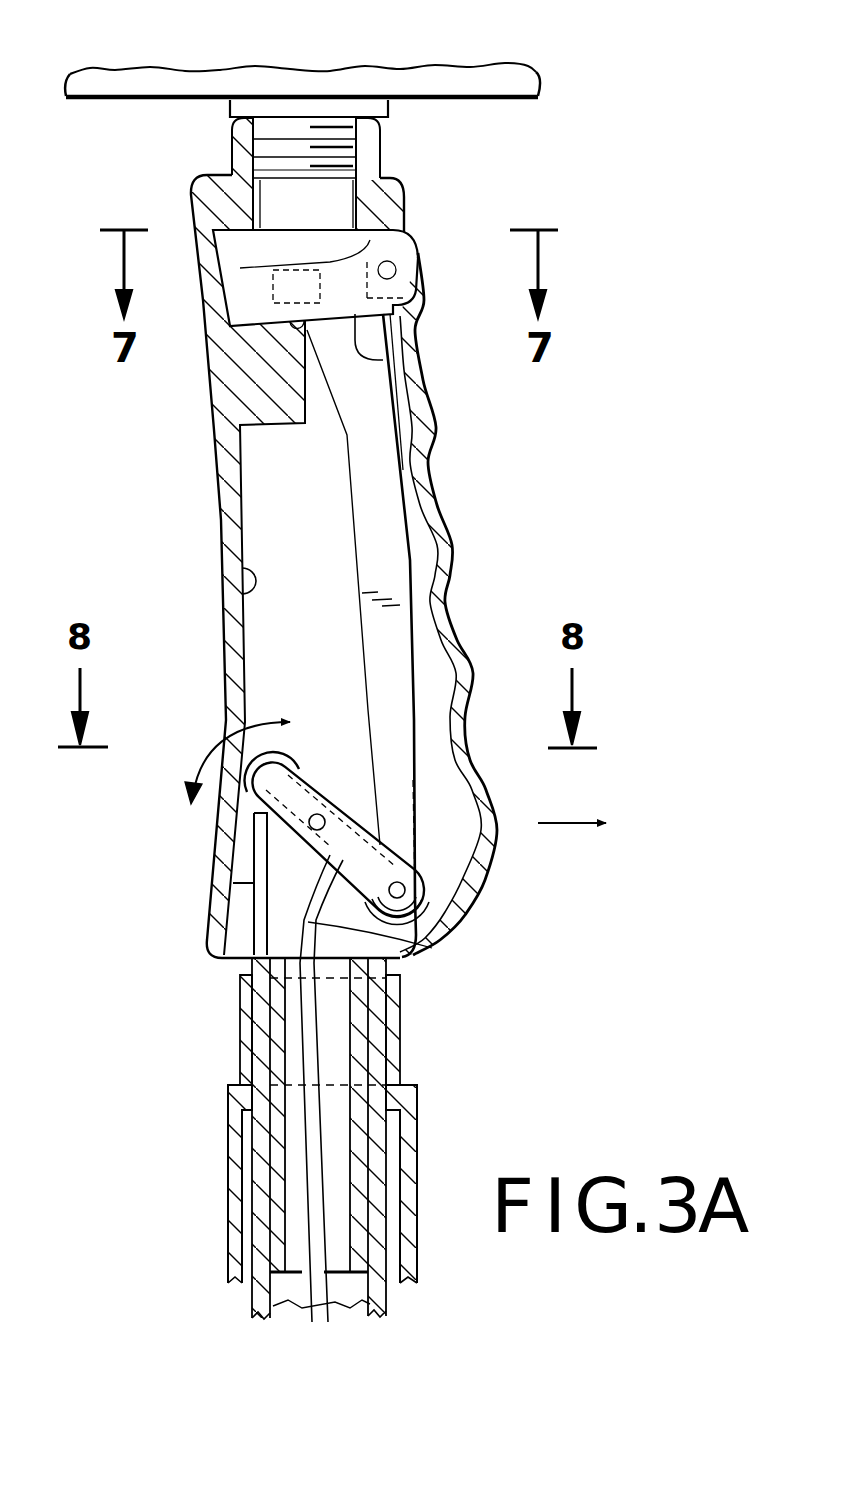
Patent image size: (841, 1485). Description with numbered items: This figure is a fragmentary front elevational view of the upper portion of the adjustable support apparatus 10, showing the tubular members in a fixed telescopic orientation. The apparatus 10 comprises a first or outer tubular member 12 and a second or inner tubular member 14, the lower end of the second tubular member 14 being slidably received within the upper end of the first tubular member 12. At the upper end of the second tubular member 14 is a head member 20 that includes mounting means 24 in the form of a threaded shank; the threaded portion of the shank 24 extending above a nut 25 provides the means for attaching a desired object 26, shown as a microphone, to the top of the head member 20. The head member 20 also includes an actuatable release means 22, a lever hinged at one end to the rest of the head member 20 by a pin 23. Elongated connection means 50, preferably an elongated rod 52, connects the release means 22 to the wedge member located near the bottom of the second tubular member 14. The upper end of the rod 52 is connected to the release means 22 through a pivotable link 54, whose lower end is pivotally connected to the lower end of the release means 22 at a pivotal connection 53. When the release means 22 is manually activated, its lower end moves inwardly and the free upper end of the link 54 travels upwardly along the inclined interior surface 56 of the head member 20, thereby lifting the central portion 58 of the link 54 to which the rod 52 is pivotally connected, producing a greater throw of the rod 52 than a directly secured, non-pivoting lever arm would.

The adjustable support apparatus 10 is at (550, 62).
The first tubular member 12 is at (224, 1199).
The second tubular member 14 is at (275, 1043).
The head member 20 is at (218, 538).
The release means 22 is at (395, 352).
The pin 23 is at (417, 253).
The mounting means 24 is at (253, 112).
The nut 25 is at (390, 113).
The mounted object 26 is at (520, 90).
The connection means 50 is at (290, 921).
The rod 52 is at (408, 958).
The pivotal connection 53 is at (410, 895).
The pivotable link 54 is at (321, 758).
The inclined interior surface 56 is at (232, 592).
The central portion of link 58 is at (341, 795).